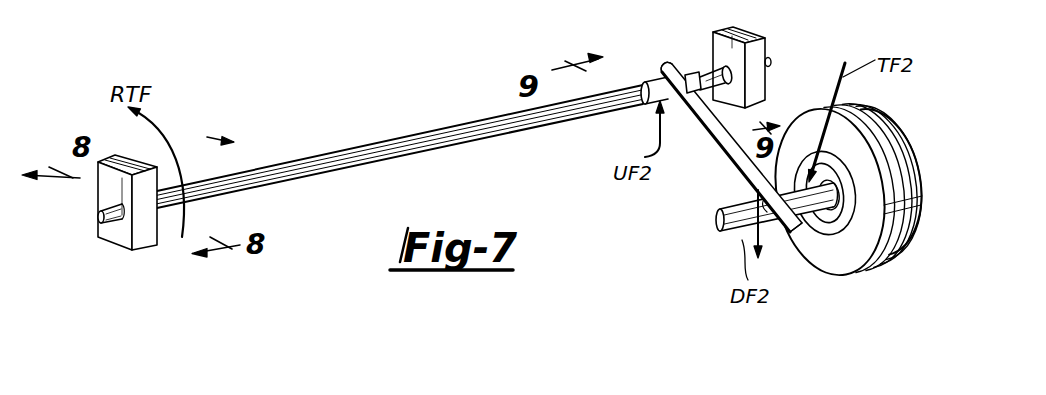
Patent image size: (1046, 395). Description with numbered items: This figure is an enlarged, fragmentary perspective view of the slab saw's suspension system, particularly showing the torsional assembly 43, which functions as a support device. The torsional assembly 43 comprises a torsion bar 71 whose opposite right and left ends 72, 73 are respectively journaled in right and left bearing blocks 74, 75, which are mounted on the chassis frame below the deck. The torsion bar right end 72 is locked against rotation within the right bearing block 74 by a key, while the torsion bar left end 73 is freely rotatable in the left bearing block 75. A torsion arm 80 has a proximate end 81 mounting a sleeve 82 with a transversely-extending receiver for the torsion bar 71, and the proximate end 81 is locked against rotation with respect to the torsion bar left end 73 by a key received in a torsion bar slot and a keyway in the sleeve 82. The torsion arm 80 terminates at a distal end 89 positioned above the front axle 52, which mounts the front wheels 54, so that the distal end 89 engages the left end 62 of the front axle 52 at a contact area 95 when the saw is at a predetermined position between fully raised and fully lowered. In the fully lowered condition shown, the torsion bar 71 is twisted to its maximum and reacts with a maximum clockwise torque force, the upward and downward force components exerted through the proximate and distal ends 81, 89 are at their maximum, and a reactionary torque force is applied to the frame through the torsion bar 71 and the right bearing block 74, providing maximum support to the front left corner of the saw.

The torsional assembly 43 is at (202, 140).
The front axle 52 is at (737, 237).
The front wheels 54 is at (907, 141).
The left end of the front axle 62 is at (826, 217).
The torsion bar 71 is at (425, 132).
The torsion bar right end 72 is at (96, 213).
The torsion bar left end 73 is at (773, 62).
The right bearing block 74 is at (132, 249).
The left bearing block 75 is at (760, 40).
The torsion arm 80 is at (712, 152).
The torsion arm proximate end 81 is at (663, 65).
The sleeve 82 is at (650, 105).
The torsion arm distal end 89 is at (788, 233).
The contact area 95 is at (748, 186).